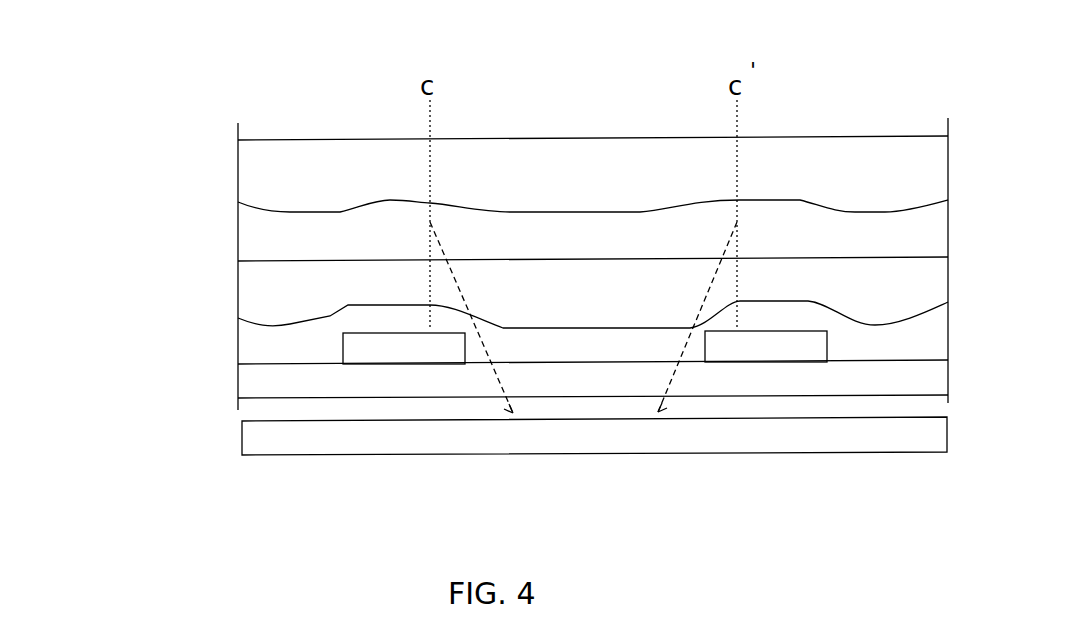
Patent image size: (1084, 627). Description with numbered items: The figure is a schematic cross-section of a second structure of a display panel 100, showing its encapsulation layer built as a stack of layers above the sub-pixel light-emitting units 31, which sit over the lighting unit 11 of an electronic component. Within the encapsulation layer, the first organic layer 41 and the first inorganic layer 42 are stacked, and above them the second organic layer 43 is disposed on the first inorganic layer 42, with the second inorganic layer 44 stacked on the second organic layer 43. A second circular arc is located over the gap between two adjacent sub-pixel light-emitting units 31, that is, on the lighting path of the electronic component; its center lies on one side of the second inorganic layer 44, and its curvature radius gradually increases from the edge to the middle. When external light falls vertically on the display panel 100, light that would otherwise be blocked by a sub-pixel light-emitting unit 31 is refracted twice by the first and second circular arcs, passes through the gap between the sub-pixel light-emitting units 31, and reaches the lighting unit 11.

The display panel 100 is at (190, 73).
The lighting unit 11 is at (277, 442).
The sub-pixel light-emitting unit 31 is at (400, 347).
The first organic layer 41 is at (277, 333).
The first inorganic layer 42 is at (273, 278).
The second organic layer 43 is at (273, 230).
The second inorganic layer 44 is at (275, 168).